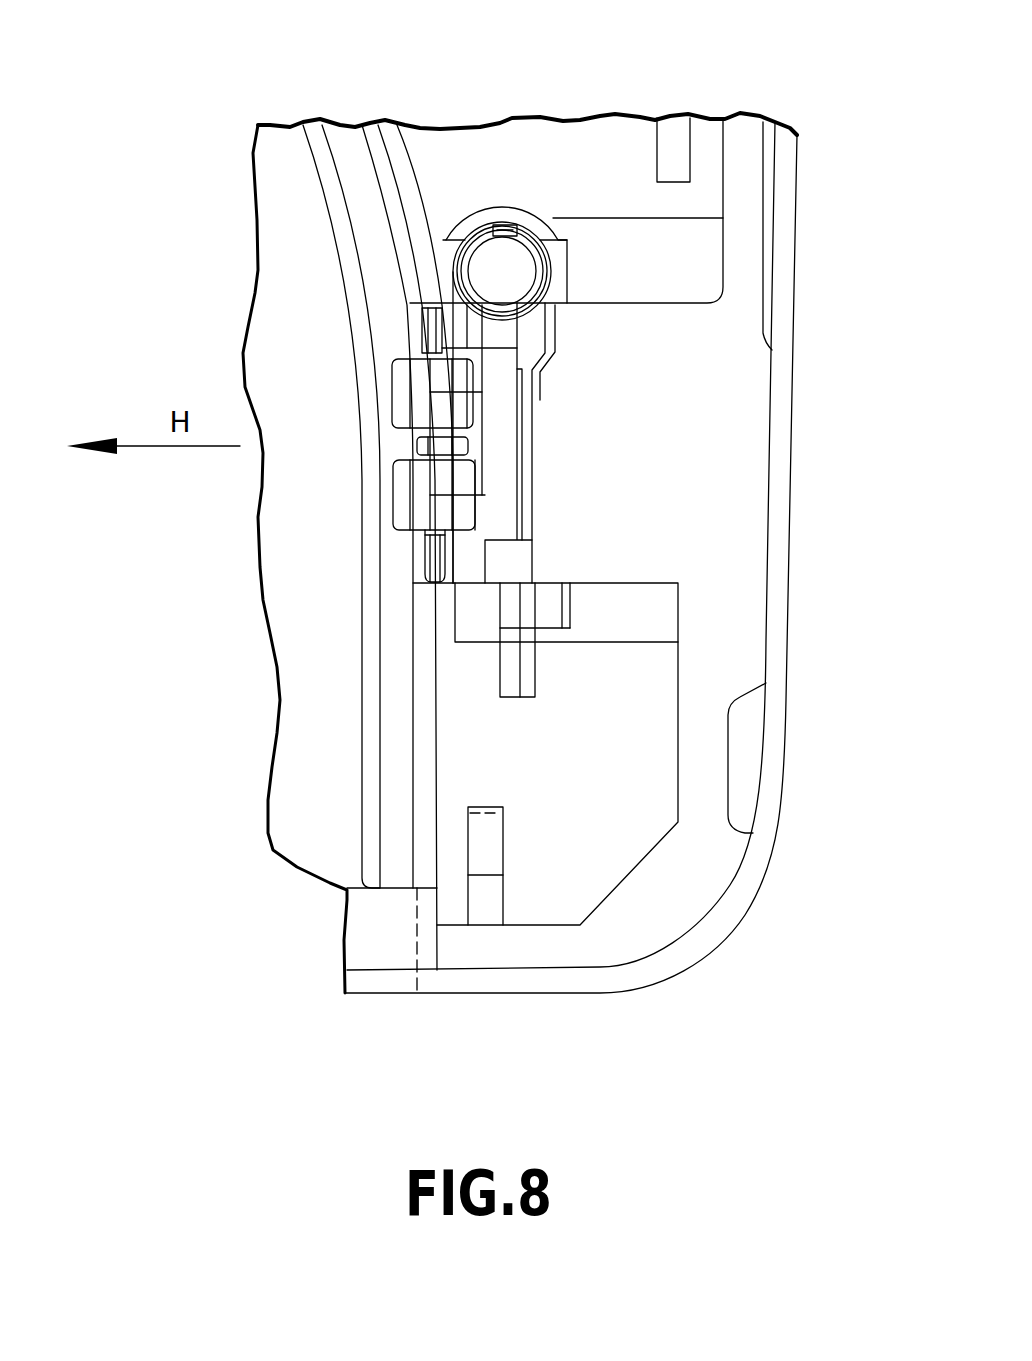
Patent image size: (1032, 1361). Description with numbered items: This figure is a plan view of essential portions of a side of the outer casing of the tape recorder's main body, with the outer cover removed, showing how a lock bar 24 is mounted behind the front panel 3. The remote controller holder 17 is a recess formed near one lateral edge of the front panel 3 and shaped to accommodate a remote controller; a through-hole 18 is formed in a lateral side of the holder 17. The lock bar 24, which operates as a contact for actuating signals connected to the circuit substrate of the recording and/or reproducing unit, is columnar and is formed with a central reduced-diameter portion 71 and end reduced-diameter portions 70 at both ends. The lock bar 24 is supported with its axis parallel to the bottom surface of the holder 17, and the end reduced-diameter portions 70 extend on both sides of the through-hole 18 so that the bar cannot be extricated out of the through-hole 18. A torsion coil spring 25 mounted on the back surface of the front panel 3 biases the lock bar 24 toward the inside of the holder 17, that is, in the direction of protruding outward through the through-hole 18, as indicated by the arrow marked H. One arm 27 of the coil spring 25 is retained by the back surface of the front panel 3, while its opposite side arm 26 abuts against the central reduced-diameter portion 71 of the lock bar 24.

The front panel 3 is at (753, 388).
The remote controller holder 17 is at (362, 793).
The through-hole 18 is at (418, 545).
The lock bar 24 is at (402, 508).
The torsion coil spring 25 is at (550, 290).
The opposite side arm 26 is at (468, 443).
The arm 27 is at (528, 535).
The end reduced-diameter portion 70 is at (433, 335).
The central reduced-diameter portion 71 is at (418, 455).